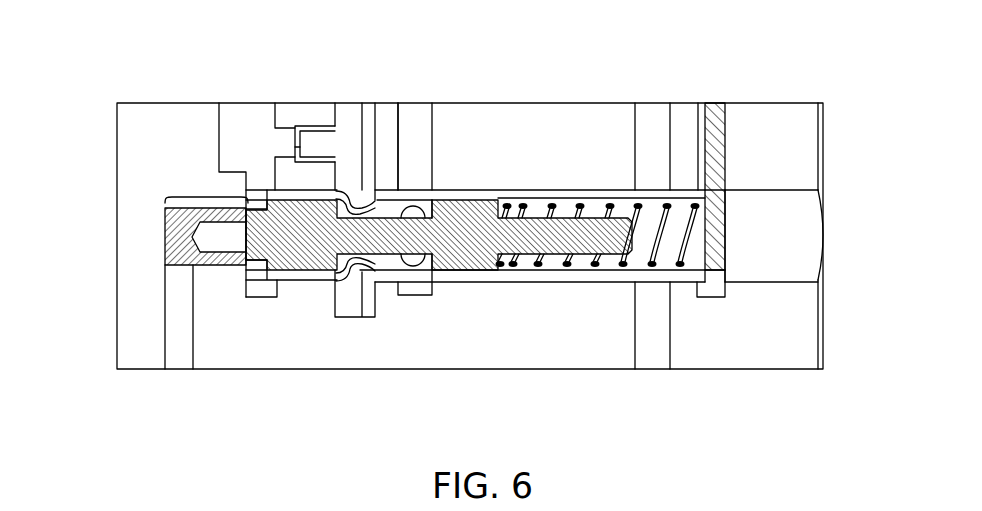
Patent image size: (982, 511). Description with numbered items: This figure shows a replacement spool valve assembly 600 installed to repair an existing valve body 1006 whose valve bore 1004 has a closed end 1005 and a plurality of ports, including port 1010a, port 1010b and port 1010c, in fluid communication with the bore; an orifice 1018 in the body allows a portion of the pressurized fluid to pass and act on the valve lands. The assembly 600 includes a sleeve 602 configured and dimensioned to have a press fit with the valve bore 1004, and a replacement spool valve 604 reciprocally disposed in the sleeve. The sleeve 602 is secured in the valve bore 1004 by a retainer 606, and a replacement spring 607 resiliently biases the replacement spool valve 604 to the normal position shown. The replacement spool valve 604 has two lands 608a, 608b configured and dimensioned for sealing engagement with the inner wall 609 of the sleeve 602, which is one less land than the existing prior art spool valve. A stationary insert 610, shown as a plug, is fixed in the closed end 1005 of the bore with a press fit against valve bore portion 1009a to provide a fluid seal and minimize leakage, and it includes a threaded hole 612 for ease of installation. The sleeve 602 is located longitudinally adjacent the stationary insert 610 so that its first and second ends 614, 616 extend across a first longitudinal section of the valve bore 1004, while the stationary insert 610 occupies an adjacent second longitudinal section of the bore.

The replacement spool valve assembly 600 is at (166, 76).
The sleeve 602 is at (478, 188).
The replacement spool valve 604 is at (283, 262).
The retainer 606 is at (712, 115).
The replacement spring 607 is at (639, 202).
The land 608a is at (313, 268).
The land 608b is at (463, 270).
The inner wall 609 is at (374, 265).
The stationary insert 610 is at (164, 251).
The threaded hole 612 is at (242, 250).
The first end 614 is at (710, 194).
The second end 616 is at (262, 196).
The valve bore 1004 is at (808, 241).
The closed end 1005 is at (158, 228).
The valve body 1006 is at (797, 118).
The valve bore portion 1009a is at (205, 192).
The port 1010a is at (178, 356).
The port 1010b is at (350, 118).
The port 1010c is at (413, 118).
The orifice 1018 is at (294, 126).